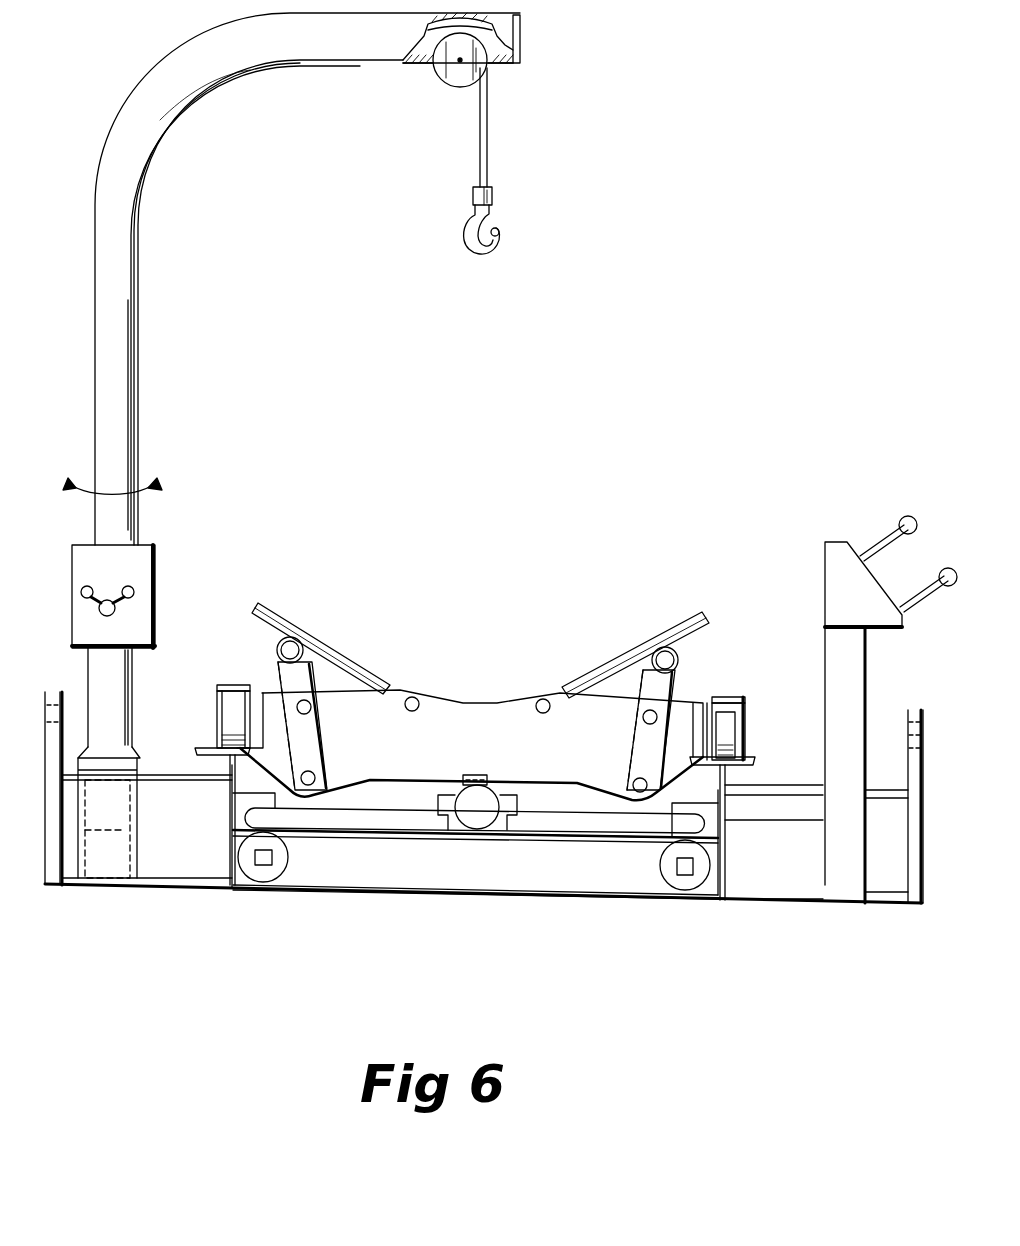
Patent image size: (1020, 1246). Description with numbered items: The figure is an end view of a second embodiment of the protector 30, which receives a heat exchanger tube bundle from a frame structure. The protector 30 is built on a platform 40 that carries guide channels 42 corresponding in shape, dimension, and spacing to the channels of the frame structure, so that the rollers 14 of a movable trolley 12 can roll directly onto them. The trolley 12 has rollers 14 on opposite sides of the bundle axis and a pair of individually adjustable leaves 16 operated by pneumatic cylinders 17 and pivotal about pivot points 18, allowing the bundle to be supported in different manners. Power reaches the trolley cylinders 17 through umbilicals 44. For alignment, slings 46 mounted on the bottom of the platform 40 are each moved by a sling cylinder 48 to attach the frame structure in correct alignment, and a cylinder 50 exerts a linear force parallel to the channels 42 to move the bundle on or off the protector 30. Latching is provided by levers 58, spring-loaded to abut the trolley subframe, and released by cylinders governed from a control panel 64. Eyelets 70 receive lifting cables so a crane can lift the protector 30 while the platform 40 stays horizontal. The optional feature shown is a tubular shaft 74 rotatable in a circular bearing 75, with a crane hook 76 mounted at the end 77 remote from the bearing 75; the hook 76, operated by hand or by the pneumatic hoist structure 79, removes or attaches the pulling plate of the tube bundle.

The movable trolley 12 is at (480, 753).
The roller 14 is at (725, 745).
The adjustable leaf 16 is at (308, 612).
The pneumatic cylinder 17 is at (288, 680).
The pivot point 18 is at (545, 713).
The protector 30 is at (812, 941).
The platform 40 is at (173, 875).
The channel 42 is at (216, 688).
The umbilical 44 is at (562, 826).
The sling 46 is at (272, 858).
The sling cylinder 48 is at (677, 887).
The cylinder 50 is at (478, 822).
The lever 58 is at (500, 790).
The control panel 64 is at (838, 573).
The eyelet 70 is at (62, 663).
The tubular shaft 74 is at (130, 440).
The circular bearing 75 is at (105, 892).
The crane hook 76 is at (500, 245).
The end of shaft 77 is at (515, 50).
The operating structure 79 is at (158, 600).